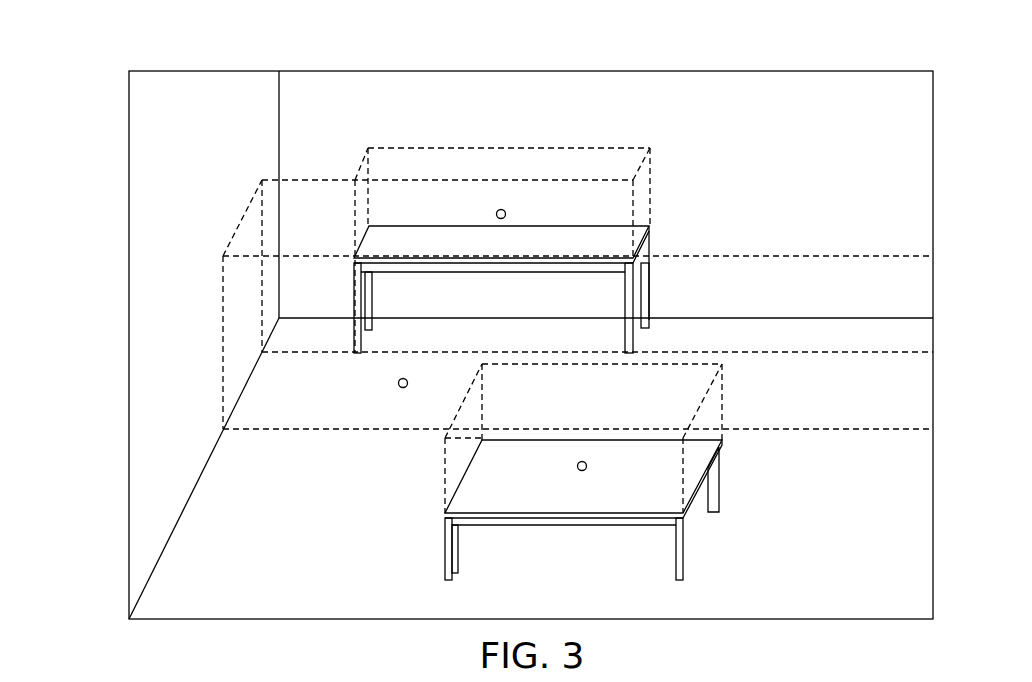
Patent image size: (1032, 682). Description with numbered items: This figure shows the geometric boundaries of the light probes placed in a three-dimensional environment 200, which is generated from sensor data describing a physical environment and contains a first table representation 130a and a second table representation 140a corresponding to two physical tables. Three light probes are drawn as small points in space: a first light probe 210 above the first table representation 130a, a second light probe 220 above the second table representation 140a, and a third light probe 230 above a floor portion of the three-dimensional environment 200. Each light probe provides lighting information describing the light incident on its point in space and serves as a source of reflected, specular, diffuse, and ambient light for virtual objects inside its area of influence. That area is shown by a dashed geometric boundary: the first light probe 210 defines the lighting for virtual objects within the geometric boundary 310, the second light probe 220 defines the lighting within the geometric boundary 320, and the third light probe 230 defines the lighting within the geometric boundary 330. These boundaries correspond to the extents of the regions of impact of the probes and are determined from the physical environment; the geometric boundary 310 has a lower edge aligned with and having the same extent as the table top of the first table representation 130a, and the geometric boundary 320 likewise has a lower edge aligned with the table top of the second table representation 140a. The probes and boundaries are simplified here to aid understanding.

The 3D environment 200 is at (127, 49).
The geometric boundary 310 is at (527, 148).
The geometric boundary 320 is at (445, 470).
The geometric boundary 330 is at (265, 430).
The first table representation 130a is at (650, 249).
The second table representation 140a is at (722, 443).
The first light probe 210 is at (506, 213).
The second light probe 220 is at (580, 471).
The third light probe 230 is at (398, 386).